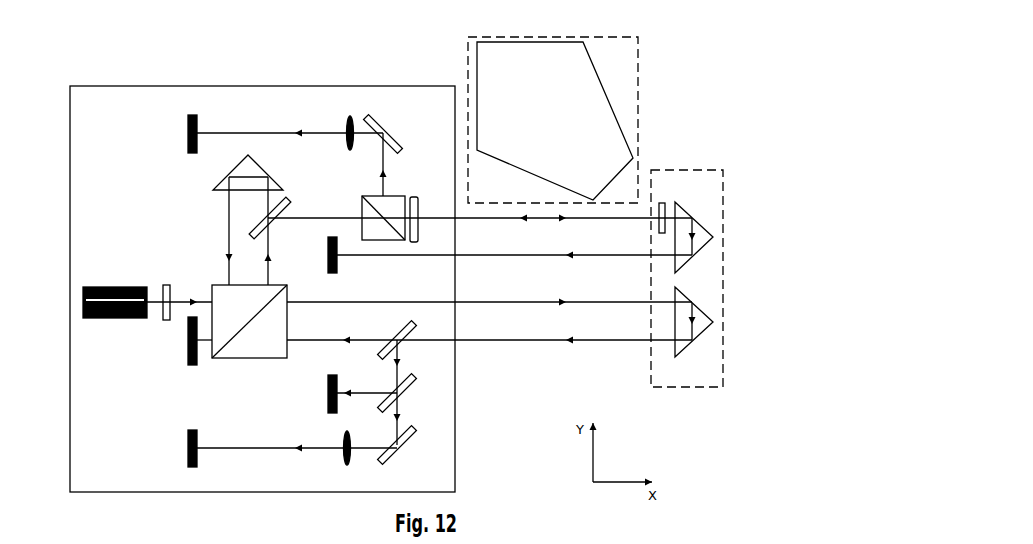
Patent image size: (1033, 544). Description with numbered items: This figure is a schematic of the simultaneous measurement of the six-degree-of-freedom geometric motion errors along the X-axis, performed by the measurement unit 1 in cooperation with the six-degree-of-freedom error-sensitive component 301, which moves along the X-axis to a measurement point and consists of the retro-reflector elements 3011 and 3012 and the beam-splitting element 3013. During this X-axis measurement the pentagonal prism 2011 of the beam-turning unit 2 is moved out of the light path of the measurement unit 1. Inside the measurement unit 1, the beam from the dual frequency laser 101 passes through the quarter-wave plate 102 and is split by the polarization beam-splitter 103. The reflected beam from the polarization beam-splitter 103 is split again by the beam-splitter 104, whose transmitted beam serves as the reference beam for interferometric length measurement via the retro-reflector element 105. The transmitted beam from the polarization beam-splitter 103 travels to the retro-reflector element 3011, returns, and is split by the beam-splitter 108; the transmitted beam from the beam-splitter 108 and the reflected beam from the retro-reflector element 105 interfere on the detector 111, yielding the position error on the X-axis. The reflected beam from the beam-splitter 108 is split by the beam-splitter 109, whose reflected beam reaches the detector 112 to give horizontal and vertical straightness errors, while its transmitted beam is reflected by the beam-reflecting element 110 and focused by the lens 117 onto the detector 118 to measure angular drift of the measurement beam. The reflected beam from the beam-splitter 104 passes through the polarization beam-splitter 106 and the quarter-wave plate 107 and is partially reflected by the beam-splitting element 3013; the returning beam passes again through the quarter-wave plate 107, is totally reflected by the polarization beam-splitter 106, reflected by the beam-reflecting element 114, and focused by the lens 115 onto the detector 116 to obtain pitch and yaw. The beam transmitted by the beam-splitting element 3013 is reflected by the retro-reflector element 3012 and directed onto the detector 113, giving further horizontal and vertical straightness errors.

The measurement unit 1 is at (270, 86).
The beam-turning unit 2 is at (638, 115).
The pentagonal prism 2011 is at (600, 78).
The dual frequency laser 101 is at (103, 287).
The quarter-wave plate 102 is at (168, 285).
The polarization beam-splitter 103 is at (250, 358).
The beam-splitter 104 is at (292, 200).
The retro-reflector element 105 is at (262, 163).
The polarization beam-splitter 106 is at (393, 195).
The quarter-wave plate 107 is at (418, 207).
The beam-splitter 108 is at (403, 325).
The beam-splitter 109 is at (413, 383).
The beam-reflecting element 110 is at (393, 463).
The detector 111 is at (188, 347).
The detector 112 is at (328, 385).
The detector 113 is at (328, 253).
The beam-reflecting element 114 is at (400, 130).
The lens 115 is at (347, 125).
The detector 116 is at (188, 130).
The lens 117 is at (345, 460).
The detector 118 is at (188, 445).
The six-degree-of-freedom error-sensitive component 301 is at (682, 387).
The retro-reflector element 3011 is at (703, 332).
The retro-reflector element 3012 is at (703, 245).
The beam-splitting element 3013 is at (660, 227).